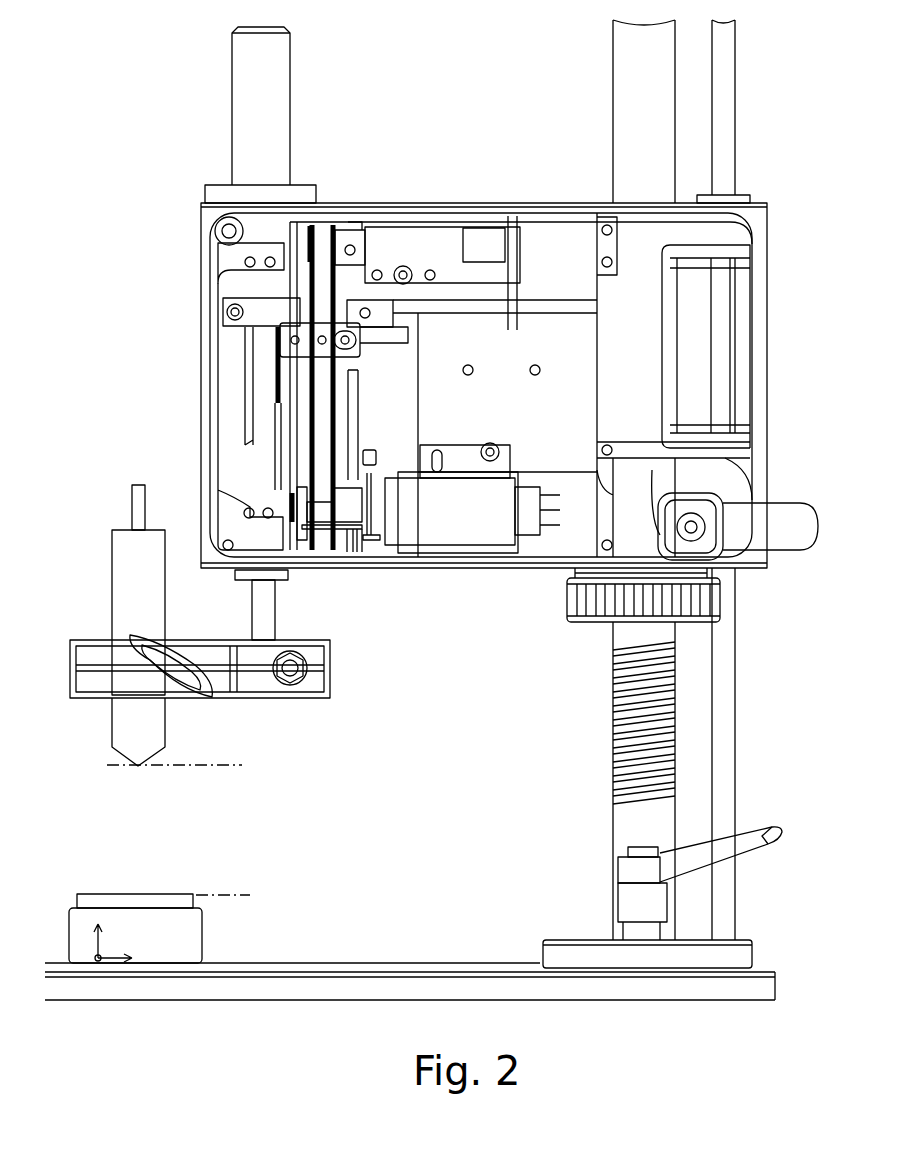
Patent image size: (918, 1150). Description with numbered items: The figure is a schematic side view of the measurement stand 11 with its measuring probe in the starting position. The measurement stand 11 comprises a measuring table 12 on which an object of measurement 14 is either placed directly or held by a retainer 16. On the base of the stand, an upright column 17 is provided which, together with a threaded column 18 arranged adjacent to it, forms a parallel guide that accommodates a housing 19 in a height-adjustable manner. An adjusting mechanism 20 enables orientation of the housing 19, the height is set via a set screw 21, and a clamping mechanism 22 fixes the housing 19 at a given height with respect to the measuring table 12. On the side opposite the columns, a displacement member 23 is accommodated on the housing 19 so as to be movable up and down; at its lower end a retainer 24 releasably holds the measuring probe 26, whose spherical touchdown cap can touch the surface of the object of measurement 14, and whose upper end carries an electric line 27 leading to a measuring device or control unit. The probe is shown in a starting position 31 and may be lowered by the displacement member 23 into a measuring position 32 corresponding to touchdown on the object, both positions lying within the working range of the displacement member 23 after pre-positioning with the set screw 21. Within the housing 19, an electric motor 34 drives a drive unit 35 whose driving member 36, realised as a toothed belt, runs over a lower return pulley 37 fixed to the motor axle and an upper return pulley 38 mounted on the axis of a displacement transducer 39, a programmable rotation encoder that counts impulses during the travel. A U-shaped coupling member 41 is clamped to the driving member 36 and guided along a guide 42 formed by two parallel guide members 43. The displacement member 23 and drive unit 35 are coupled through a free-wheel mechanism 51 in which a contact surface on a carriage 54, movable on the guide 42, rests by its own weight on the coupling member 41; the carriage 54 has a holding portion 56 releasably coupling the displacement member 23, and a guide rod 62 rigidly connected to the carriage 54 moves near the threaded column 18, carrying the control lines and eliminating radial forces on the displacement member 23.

The measurement stand 11 is at (478, 762).
The measuring table 12 is at (355, 965).
The object of measurement 14 is at (150, 895).
The retainer 16 is at (190, 935).
The upright column 17 is at (722, 714).
The threaded column 18 is at (625, 820).
The housing 19 is at (430, 190).
The adjusting mechanism 20 is at (575, 932).
The set screw 21 is at (575, 605).
The clamping mechanism 22 is at (793, 563).
The displacement member 23 is at (262, 620).
The retainer 24 is at (330, 667).
The measuring probe 26 is at (122, 590).
The electric line 27 is at (132, 512).
The starting position 31 is at (215, 750).
The measuring position 32 is at (222, 882).
The electric motor 34 is at (461, 498).
The drive unit 35 is at (395, 580).
The driving member 36 is at (320, 262).
The lower return pulley 37 is at (343, 505).
The upper return pulley 38 is at (346, 245).
The displacement transducer 39 is at (480, 245).
The coupling member 41 is at (275, 410).
The guide 42 is at (304, 165).
The guide member 43 is at (365, 230).
The free-wheel mechanism 51 is at (305, 355).
The carriage 54 is at (265, 300).
The holding portion 56 is at (262, 342).
The guide rod 62 is at (552, 300).